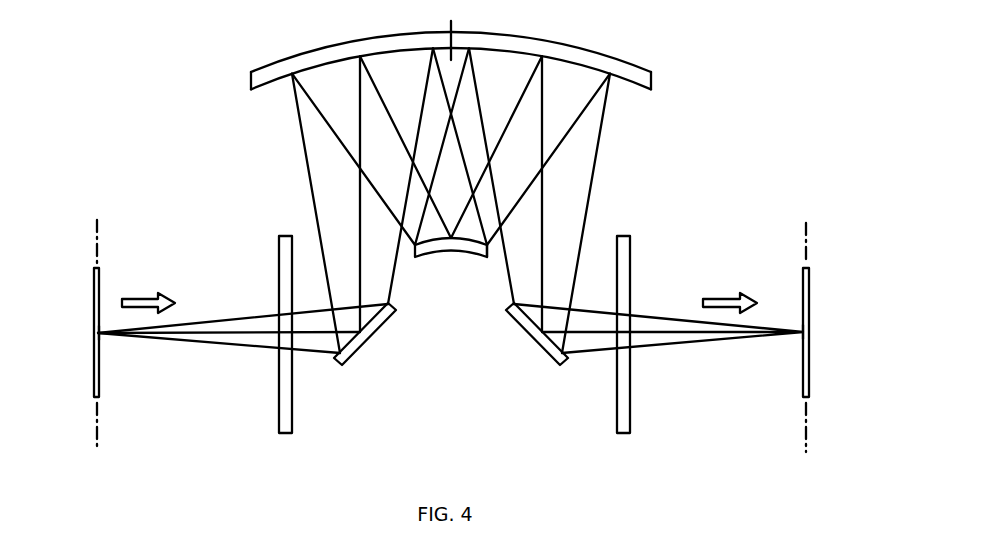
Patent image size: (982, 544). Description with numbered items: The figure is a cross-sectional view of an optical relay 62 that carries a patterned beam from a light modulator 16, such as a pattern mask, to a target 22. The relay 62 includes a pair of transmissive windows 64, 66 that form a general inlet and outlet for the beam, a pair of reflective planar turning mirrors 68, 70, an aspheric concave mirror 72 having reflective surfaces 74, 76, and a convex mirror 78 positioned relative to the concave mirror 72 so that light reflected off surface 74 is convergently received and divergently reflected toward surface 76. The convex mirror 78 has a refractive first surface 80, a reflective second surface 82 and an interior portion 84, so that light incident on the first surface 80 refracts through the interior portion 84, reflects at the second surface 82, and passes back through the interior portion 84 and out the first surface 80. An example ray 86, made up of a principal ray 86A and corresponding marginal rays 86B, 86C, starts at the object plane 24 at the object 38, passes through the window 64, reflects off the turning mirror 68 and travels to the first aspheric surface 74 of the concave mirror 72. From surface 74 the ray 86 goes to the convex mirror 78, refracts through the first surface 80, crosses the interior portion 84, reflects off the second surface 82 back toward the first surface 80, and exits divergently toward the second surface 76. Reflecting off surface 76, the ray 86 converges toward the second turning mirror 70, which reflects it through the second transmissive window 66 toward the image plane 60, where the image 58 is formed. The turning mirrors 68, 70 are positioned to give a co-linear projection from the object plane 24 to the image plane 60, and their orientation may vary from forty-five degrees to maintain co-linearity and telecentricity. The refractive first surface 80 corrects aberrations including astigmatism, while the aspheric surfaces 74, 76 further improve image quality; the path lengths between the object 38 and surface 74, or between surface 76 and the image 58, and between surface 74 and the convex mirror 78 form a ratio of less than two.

The light modulator 16 is at (93, 306).
The target 22 is at (803, 303).
The object plane 24 is at (98, 242).
The object 38 is at (100, 337).
The image 58 is at (798, 335).
The image plane 60 is at (808, 243).
The optical relay 62 is at (160, 107).
The transmissive window 64 is at (278, 393).
The transmissive window 66 is at (617, 400).
The turning mirror 68 is at (375, 333).
The turning mirror 70 is at (522, 333).
The aspheric concave mirror 72 is at (434, 83).
The reflective surface 74 is at (270, 64).
The reflective surface 76 is at (562, 63).
The convex mirror 78 is at (406, 249).
The refractive first surface 80 is at (430, 241).
The reflective second surface 82 is at (445, 251).
The interior portion 84 is at (462, 245).
The ray 86 is at (243, 343).
The principal ray 86A is at (242, 335).
The marginal ray 86B is at (183, 340).
The marginal ray 86C is at (220, 320).